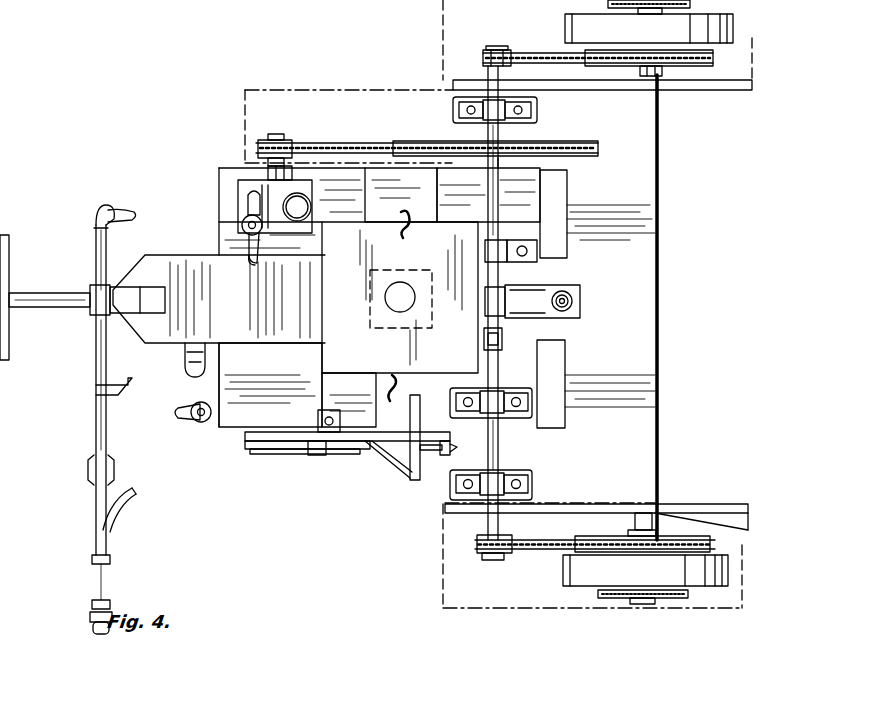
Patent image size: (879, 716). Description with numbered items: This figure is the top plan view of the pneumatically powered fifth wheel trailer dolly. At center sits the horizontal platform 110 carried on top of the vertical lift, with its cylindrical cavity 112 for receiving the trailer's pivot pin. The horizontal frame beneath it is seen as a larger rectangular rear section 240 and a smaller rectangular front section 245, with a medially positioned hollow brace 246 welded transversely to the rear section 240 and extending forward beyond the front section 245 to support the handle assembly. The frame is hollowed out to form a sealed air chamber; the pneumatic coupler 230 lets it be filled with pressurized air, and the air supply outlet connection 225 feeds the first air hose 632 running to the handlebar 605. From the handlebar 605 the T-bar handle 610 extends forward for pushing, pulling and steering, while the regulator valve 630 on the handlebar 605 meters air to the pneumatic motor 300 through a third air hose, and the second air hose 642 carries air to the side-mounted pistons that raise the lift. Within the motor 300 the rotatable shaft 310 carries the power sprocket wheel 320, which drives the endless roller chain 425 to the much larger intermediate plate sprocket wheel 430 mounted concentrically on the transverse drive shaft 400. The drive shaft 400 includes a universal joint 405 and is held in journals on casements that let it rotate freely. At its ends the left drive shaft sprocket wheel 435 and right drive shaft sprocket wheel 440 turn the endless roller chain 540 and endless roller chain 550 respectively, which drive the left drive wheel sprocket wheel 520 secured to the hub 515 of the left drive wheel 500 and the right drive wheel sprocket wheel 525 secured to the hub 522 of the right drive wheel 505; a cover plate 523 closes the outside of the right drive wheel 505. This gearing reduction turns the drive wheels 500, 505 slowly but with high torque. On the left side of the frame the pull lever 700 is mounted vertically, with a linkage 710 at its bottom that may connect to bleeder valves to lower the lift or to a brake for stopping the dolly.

The platform 110 is at (462, 360).
The cylindrical cavity 112 is at (395, 303).
The air supply outlet connection 225 is at (186, 358).
The pneumatic coupler 230 is at (210, 422).
The rear section 240 is at (610, 236).
The front section 245 is at (287, 368).
The hollow brace 246 is at (240, 330).
The pneumatic motor 300 is at (245, 192).
The rotatable shaft 310 is at (272, 134).
The power sprocket wheel 320 is at (290, 138).
The drive shaft 400 is at (488, 60).
The universal joint 405 is at (500, 192).
The endless roller chain 425 is at (380, 140).
The intermediate plate sprocket wheel 430 is at (657, 160).
The left drive shaft sprocket wheel 435 is at (480, 560).
The right drive shaft sprocket wheel 440 is at (497, 46).
The left drive wheel 500 is at (728, 572).
The right drive wheel 505 is at (733, 30).
The hub 515 is at (748, 520).
The left drive wheel sprocket wheel 520 is at (715, 546).
The hub 522 is at (665, 78).
The cover plate 523 is at (690, 4).
The right drive wheel sprocket wheel 525 is at (662, 70).
The endless roller chain 540 is at (528, 590).
The endless roller chain 550 is at (545, 50).
The handlebar 605 is at (85, 470).
The T-bar handle 610 is at (14, 239).
The regulator valve 630 is at (92, 586).
The first air hose 632 is at (120, 516).
The second air hose 642 is at (96, 421).
The pull lever 700 is at (402, 475).
The linkage 710 is at (295, 454).